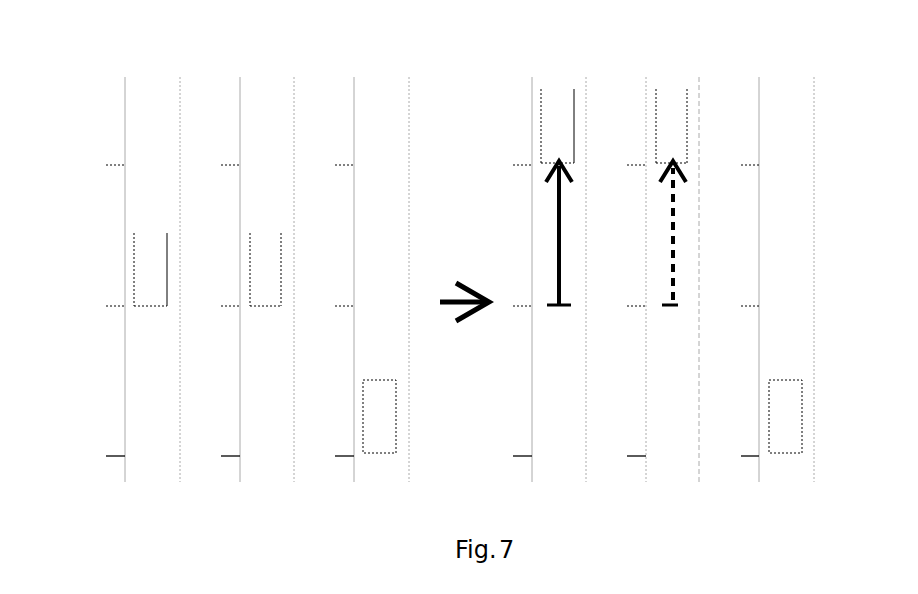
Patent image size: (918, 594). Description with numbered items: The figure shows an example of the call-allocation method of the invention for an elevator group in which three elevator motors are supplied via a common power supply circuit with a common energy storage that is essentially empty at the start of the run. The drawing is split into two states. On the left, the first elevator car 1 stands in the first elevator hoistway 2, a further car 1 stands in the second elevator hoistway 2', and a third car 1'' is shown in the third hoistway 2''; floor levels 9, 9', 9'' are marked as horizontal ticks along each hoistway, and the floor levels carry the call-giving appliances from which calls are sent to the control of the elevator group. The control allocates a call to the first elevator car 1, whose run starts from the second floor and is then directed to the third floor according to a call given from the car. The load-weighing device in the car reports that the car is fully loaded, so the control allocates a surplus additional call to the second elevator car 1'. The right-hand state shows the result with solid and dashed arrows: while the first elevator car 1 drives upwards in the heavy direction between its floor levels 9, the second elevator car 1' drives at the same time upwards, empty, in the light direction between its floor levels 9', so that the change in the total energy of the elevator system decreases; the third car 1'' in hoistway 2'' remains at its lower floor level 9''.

The first elevator car 1 is at (354, 204).
The second elevator car 1' is at (672, 165).
The component (third position) 1'' is at (582, 455).
The first elevator hoistway 2 is at (329, 279).
The second elevator hoistway 2' is at (447, 279).
The third track 2'' is at (560, 279).
The floor level 9 is at (302, 214).
The second track marker 9' is at (419, 235).
The third track marker 9'' is at (532, 214).